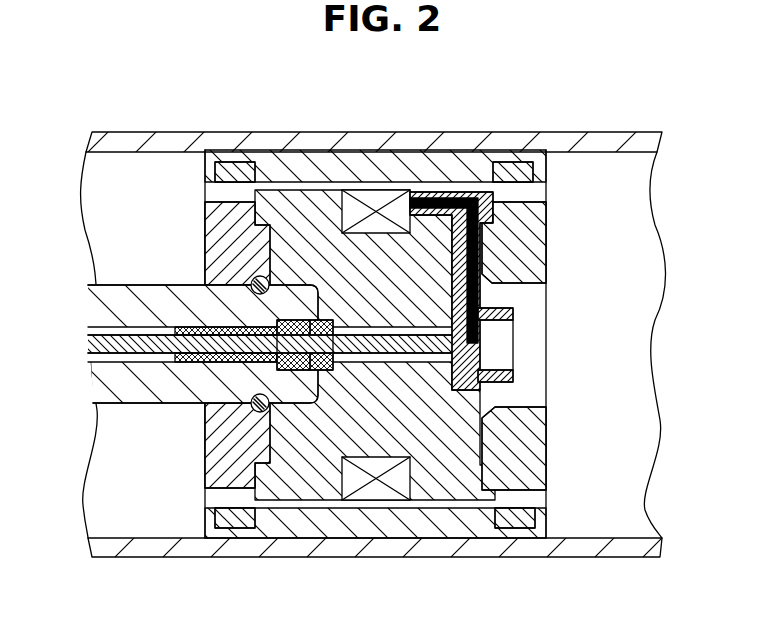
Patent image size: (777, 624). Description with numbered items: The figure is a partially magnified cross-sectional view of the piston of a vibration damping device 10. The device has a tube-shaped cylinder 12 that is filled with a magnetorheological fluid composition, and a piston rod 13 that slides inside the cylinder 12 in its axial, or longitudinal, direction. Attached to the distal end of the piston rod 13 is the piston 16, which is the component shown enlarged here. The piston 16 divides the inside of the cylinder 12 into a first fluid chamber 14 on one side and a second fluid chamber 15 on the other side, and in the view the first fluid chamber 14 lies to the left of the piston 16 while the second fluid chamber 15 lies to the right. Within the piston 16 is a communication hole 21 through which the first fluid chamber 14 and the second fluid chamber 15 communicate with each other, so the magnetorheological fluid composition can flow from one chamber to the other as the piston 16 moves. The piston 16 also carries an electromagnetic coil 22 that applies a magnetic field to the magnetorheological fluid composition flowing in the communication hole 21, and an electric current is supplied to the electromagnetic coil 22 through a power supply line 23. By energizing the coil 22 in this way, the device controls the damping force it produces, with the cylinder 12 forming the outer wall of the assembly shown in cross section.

The vibration damping device 10 is at (262, 104).
The cylinder 12 is at (537, 558).
The piston rod 13 is at (157, 405).
The first fluid chamber 14 is at (165, 232).
The second fluid chamber 15 is at (623, 257).
The piston 16 is at (205, 463).
The communication hole 21 is at (330, 172).
The electromagnetic coil 22 is at (383, 200).
The power supply line 23 is at (458, 200).